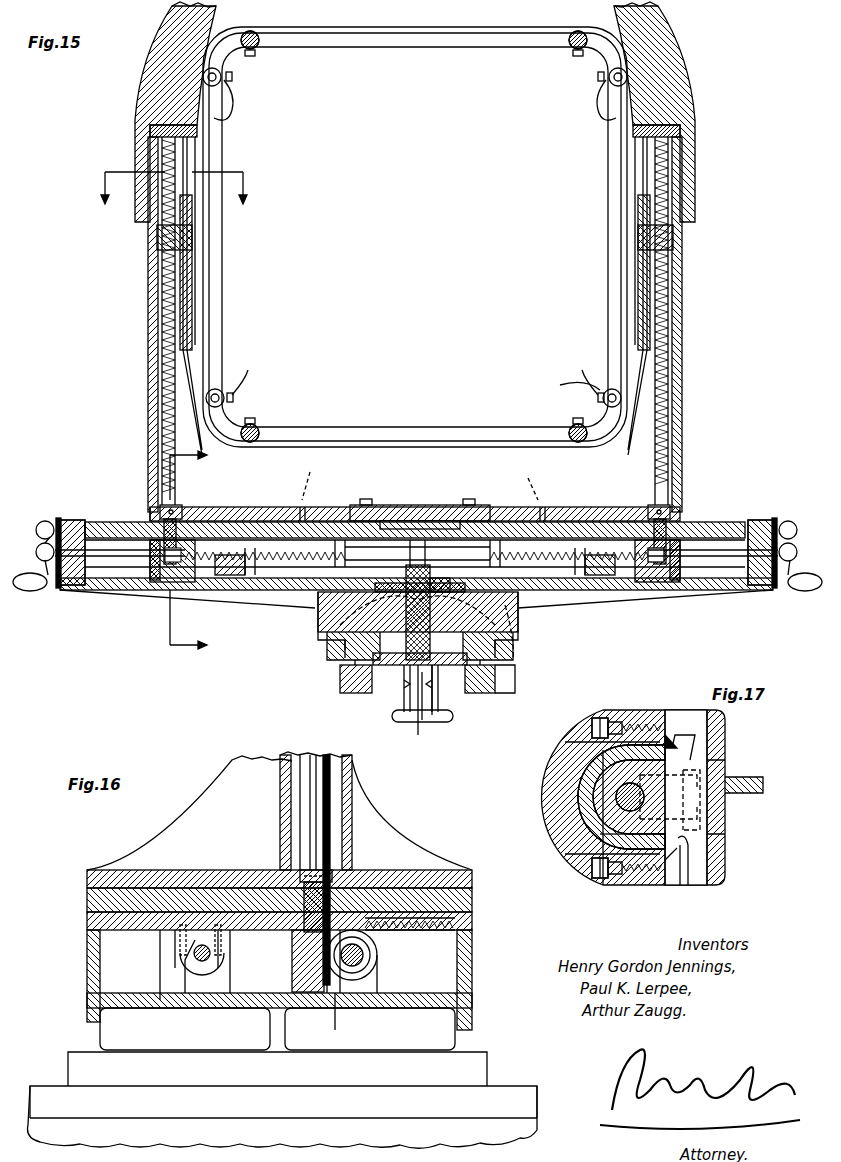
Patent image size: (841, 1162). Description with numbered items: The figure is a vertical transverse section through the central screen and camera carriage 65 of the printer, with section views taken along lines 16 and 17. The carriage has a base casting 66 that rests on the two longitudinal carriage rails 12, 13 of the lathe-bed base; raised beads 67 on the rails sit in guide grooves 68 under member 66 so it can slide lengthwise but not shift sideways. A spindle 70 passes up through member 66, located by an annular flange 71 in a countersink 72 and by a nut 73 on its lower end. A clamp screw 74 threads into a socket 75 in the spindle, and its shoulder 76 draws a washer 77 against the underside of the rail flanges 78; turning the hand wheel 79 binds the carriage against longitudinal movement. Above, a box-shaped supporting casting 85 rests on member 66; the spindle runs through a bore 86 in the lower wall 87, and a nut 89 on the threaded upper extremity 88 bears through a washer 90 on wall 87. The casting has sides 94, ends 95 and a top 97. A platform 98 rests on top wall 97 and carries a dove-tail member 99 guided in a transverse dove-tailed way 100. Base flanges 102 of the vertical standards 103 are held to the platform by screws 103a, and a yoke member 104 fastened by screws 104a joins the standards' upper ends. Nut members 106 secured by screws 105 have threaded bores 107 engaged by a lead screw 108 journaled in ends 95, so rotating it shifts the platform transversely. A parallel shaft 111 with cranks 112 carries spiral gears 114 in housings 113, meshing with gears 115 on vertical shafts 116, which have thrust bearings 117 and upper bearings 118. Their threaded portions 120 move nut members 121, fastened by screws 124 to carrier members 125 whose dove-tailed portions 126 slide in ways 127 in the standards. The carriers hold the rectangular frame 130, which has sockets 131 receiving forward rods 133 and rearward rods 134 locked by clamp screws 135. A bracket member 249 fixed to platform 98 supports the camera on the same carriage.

In FIG. 15, the carriage rail 12 is at (340, 680).
In FIG. 16, the carriage rail 12 is at (520, 1110).
In FIG. 15, the carriage rail 13 is at (505, 672).
In FIG. 15, the casting 16 is at (200, 553).
In FIG. 15, the vertical wall 17 is at (171, 176).
In FIG. 15, the central screen and camera carriage 65 is at (742, 520).
In FIG. 16, the central screen and camera carriage 65 is at (82, 927).
In FIG. 15, the base casting 66 is at (498, 650).
In FIG. 16, the base casting 66 is at (68, 1062).
In FIG. 15, the bead 67 is at (345, 645).
In FIG. 16, the bead 67 is at (42, 1088).
In FIG. 15, the guide groove 68 is at (340, 620).
In FIG. 15, the spindle 70 is at (444, 715).
In FIG. 15, the annular flange 71 is at (440, 680).
In FIG. 15, the countersink 72 is at (442, 685).
In FIG. 15, the nut 73 is at (373, 659).
In FIG. 15, the clamp screw 74 is at (405, 710).
In FIG. 15, the socket 75 is at (408, 690).
In FIG. 15, the shoulder 76 is at (425, 722).
In FIG. 15, the washer 77 is at (400, 690).
In FIG. 15, the rail flange 78 is at (340, 670).
In FIG. 15, the hand wheel 79 is at (418, 722).
In FIG. 15, the supporting casting 85 is at (130, 600).
In FIG. 16, the supporting casting 85 is at (472, 1017).
In FIG. 15, the bore 86 is at (380, 586).
In FIG. 16, the lower wall 87 is at (240, 1008).
In FIG. 15, the screw-threaded upper extremity 88 is at (412, 580).
In FIG. 15, the nut 89 is at (435, 582).
In FIG. 15, the washer 90 is at (520, 665).
In FIG. 15, the side 94 is at (108, 570).
In FIG. 16, the side 94 is at (87, 966).
In FIG. 15, the end 95 is at (70, 535).
In FIG. 15, the top wall 97 is at (130, 540).
In FIG. 16, the top wall 97 is at (87, 898).
In FIG. 15, the platform 98 is at (262, 512).
In FIG. 16, the platform 98 is at (118, 870).
In FIG. 15, the dove-tail member 99 is at (290, 548).
In FIG. 16, the dove-tail member 99 is at (255, 943).
In FIG. 16, the dove-tailed way 100 is at (172, 927).
In FIG. 15, the base flange 102 is at (262, 515).
In FIG. 16, the base flange 102 is at (420, 865).
In FIG. 15, the supporting standard 103 is at (148, 376).
In FIG. 16, the supporting standard 103 is at (352, 798).
In FIG. 17, the supporting standard 103 is at (650, 885).
In FIG. 15, the screw 103a is at (422, 488).
In FIG. 15, the yoke member 104 is at (170, 74).
In FIG. 17, the yoke member 104 is at (556, 766).
In FIG. 17, the screw 104a is at (598, 718).
In FIG. 16, the screw 105 is at (160, 958).
In FIG. 15, the nut member 106 is at (225, 575).
In FIG. 16, the nut member 106 is at (185, 965).
In FIG. 15, the screw-threaded bore 107 is at (250, 575).
In FIG. 16, the screw-threaded bore 107 is at (200, 960).
In FIG. 15, the lead screw 108 is at (152, 545).
In FIG. 16, the lead screw 108 is at (235, 955).
In FIG. 15, the shaft 111 is at (98, 550).
In FIG. 16, the shaft 111 is at (355, 975).
In FIG. 15, the operating crank 112 is at (43, 590).
In FIG. 16, the housing member 113 is at (372, 968).
In FIG. 16, the spiral gear 114 is at (365, 957).
In FIG. 15, the spiral gear 115 is at (170, 582).
In FIG. 16, the spiral gear 115 is at (340, 980).
In FIG. 15, the vertical shaft 116 is at (185, 395).
In FIG. 16, the vertical shaft 116 is at (330, 835).
In FIG. 17, the vertical shaft 116 is at (598, 790).
In FIG. 15, the thrust bearing 117 is at (168, 505).
In FIG. 16, the thrust bearing 117 is at (300, 873).
In FIG. 15, the bearing 118 is at (150, 131).
In FIG. 15, the screw-threaded portion 120 is at (162, 300).
In FIG. 17, the screw-threaded portion 120 is at (616, 797).
In FIG. 15, the nut member 121 is at (160, 243).
In FIG. 17, the nut member 121 is at (615, 825).
In FIG. 17, the screw 124 is at (720, 752).
In FIG. 15, the carrier member 125 is at (192, 255).
In FIG. 17, the carrier member 125 is at (710, 840).
In FIG. 17, the dove-tailed portion 126 is at (675, 735).
In FIG. 17, the vertical dove-tail way 127 is at (665, 740).
In FIG. 15, the rectangular frame 130 is at (232, 338).
In FIG. 17, the rectangular frame 130 is at (728, 776).
In FIG. 15, the supporting-rod socket 131 is at (222, 84).
In FIG. 15, the forwardly projecting supporting rod 133 is at (258, 35).
In FIG. 15, the rearwardly projecting rod 134 is at (232, 110).
In FIG. 15, the clamp screw 135 is at (575, 383).
In FIG. 15, the bracket member 249 is at (408, 506).